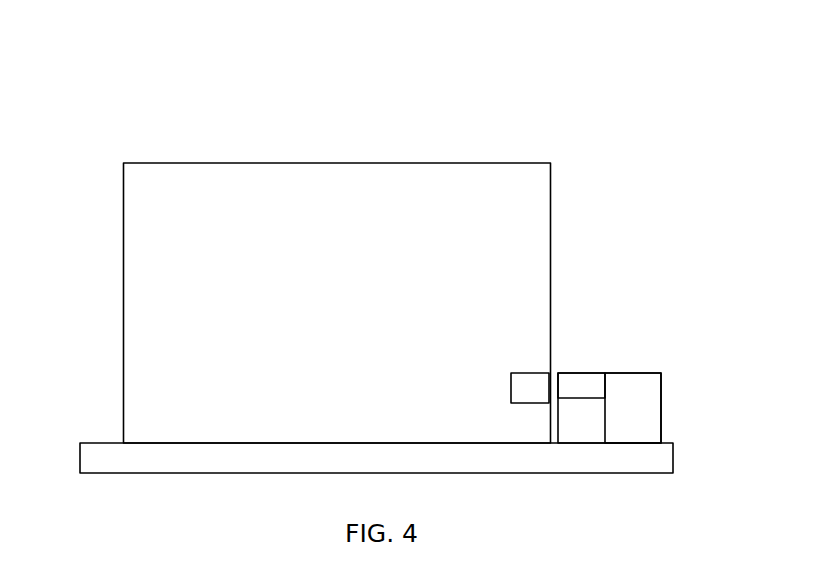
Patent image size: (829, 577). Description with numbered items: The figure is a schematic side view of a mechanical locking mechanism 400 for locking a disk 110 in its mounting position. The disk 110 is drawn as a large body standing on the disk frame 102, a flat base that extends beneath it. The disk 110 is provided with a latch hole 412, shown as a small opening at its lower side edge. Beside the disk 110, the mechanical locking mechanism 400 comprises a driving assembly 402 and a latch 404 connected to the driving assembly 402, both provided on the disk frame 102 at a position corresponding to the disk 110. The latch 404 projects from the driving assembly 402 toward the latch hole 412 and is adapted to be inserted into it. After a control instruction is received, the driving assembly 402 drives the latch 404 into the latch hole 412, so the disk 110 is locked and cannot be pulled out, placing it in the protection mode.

The disk frame 102 is at (100, 453).
The disk 110 is at (507, 162).
The mechanical locking mechanism 400 is at (650, 374).
The driving assembly 402 is at (648, 405).
The latch 404 is at (587, 382).
The latch hole 412 is at (526, 383).